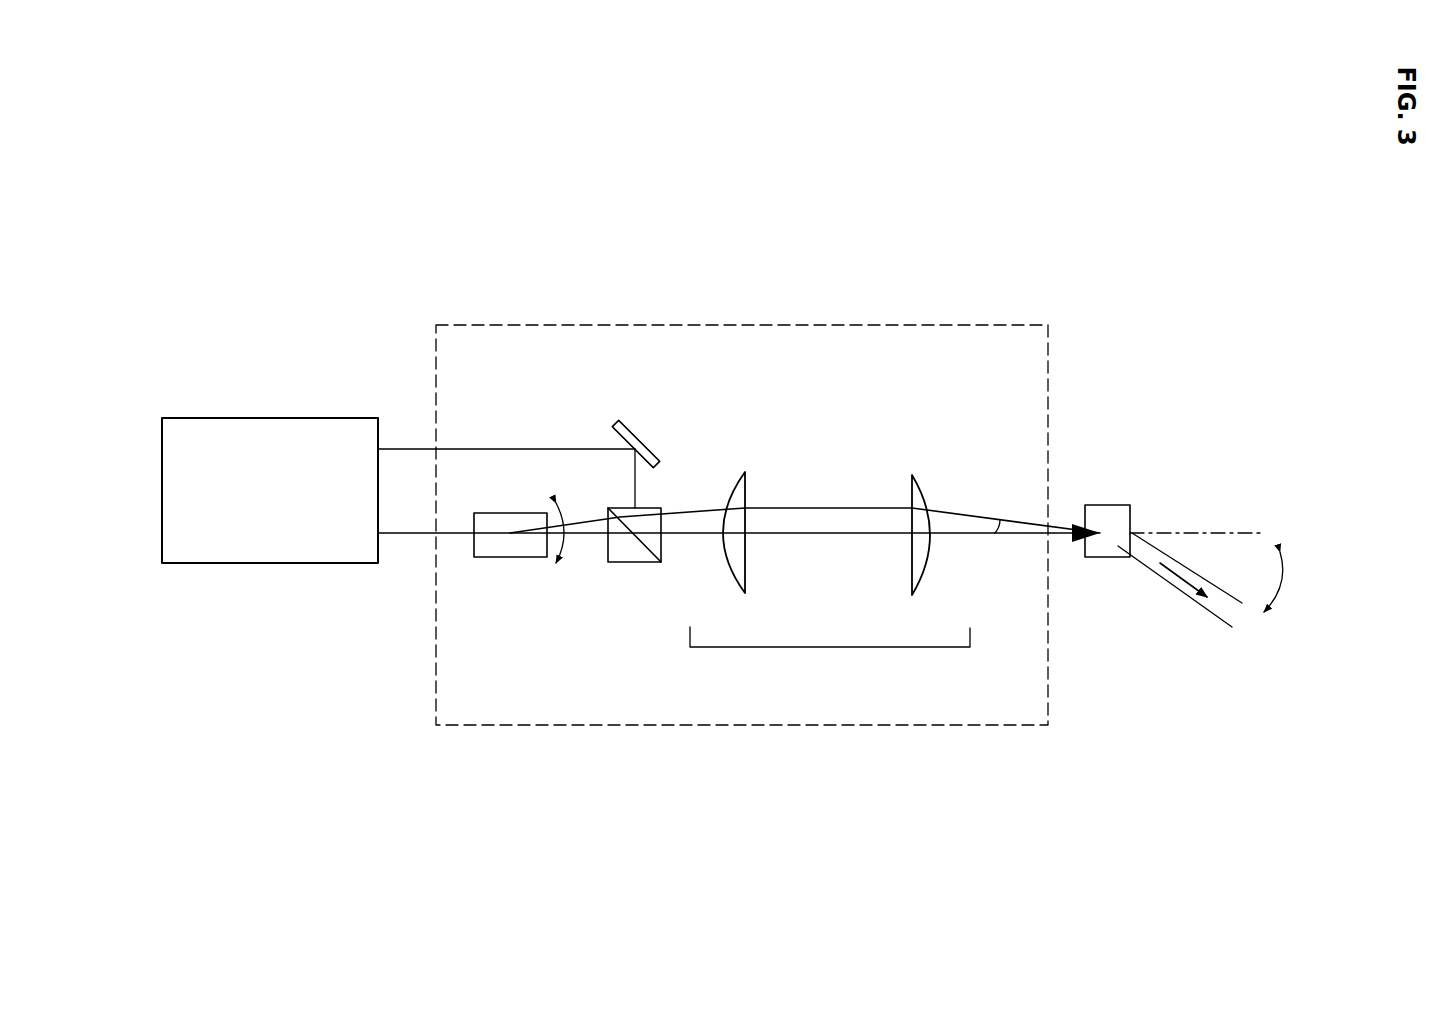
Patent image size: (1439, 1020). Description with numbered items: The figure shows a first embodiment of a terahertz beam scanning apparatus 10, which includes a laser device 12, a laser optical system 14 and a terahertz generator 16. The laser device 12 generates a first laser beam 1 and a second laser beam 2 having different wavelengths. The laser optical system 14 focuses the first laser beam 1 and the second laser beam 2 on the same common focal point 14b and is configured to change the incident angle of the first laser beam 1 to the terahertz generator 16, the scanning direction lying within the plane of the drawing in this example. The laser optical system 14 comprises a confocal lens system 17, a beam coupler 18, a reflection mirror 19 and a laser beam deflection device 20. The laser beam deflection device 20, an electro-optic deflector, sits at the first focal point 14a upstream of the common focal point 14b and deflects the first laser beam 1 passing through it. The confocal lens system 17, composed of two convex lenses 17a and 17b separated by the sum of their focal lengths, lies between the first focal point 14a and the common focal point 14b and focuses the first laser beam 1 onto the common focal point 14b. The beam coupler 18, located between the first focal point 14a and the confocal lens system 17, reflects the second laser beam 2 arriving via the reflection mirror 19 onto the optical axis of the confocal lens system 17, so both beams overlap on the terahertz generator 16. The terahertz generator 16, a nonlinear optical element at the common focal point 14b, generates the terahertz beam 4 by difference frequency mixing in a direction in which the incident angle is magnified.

The terahertz beam scanning apparatus 10 is at (298, 292).
The laser device 12 is at (263, 415).
The first laser beam 1 is at (405, 537).
The second laser beam 2 is at (408, 447).
The laser optical system 14 is at (833, 322).
The first focal point 14a is at (510, 560).
The common focal point 14b is at (1107, 563).
The terahertz generator 16 is at (1110, 515).
The confocal lens system 17 is at (830, 589).
The convex lens 17a is at (740, 568).
The convex lens 17b is at (910, 568).
The beam coupler 18 is at (648, 512).
The reflection mirror 19 is at (628, 418).
The laser beam deflection device 20 is at (535, 553).
The terahertz beam 4 is at (1190, 592).